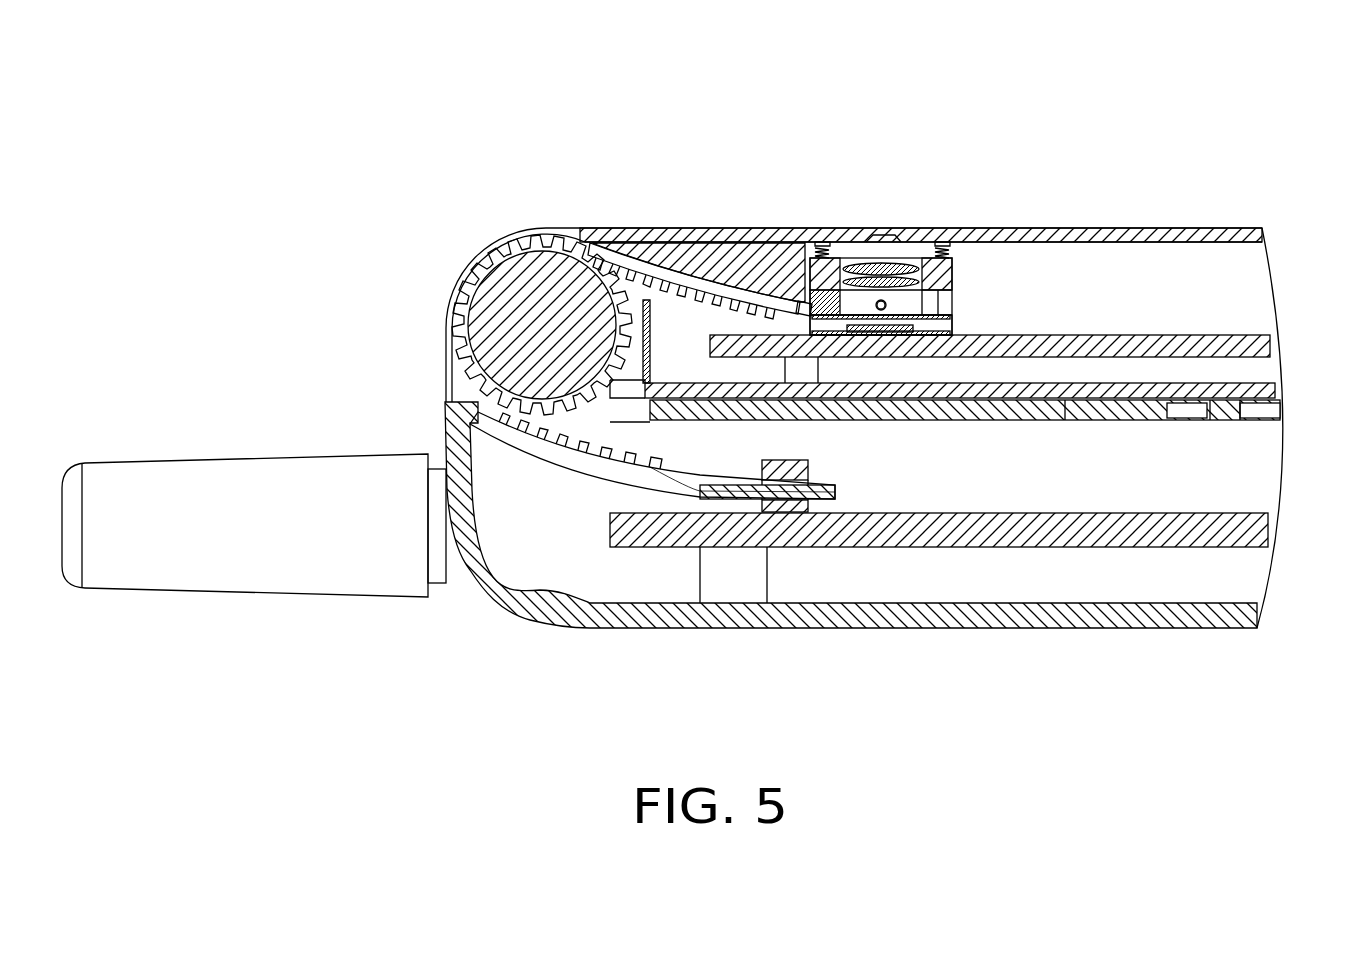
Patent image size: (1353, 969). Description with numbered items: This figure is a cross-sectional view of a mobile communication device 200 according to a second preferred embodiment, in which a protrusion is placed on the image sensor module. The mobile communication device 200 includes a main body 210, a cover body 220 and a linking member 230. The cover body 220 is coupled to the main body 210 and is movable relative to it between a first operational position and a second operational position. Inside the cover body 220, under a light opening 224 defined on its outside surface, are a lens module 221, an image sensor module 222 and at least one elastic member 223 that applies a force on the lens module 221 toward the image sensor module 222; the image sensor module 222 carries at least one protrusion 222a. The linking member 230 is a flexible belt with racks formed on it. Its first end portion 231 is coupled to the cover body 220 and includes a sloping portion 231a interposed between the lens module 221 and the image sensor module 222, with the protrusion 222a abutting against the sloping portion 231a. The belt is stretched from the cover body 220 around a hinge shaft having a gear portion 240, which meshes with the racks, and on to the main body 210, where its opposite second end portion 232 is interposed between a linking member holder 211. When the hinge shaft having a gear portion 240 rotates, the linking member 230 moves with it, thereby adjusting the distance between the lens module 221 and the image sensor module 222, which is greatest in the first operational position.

The mobile communication device 200 is at (810, 52).
The main body 210 is at (1250, 470).
The linking member holder 211 is at (797, 507).
The cover body 220 is at (1216, 292).
The lens module 221 is at (912, 258).
The image sensor module 222 is at (952, 318).
The protrusion 222a is at (886, 306).
The elastic member 223 is at (940, 247).
The light opening 224 is at (872, 237).
The linking member 230 is at (693, 290).
The first end portion 231 is at (800, 297).
The sloping portion 231a is at (812, 300).
The second end portion 232 is at (830, 493).
The hinge shaft having a gear portion 240 is at (530, 322).